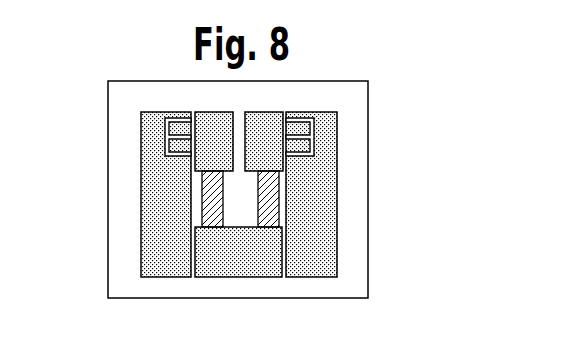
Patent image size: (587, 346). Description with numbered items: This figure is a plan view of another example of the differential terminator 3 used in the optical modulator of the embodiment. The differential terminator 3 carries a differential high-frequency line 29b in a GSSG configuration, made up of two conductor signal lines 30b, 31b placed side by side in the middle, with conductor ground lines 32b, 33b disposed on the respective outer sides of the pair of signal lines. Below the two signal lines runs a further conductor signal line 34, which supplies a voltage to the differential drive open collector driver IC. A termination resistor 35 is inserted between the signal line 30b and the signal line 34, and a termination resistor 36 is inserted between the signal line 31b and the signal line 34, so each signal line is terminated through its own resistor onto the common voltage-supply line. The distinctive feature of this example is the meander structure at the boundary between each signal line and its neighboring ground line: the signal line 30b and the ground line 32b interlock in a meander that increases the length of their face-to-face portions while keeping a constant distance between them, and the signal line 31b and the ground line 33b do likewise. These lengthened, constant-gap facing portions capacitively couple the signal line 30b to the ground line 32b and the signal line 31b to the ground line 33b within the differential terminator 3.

The differential terminator 3 is at (368, 117).
The differential high-frequency line 29b is at (241, 208).
The signal line 30b is at (295, 139).
The signal line 31b is at (200, 130).
The ground line 32b is at (337, 259).
The ground line 33b is at (143, 260).
The signal line 34 is at (232, 264).
The termination resistor 35 is at (275, 212).
The termination resistor 36 is at (202, 213).